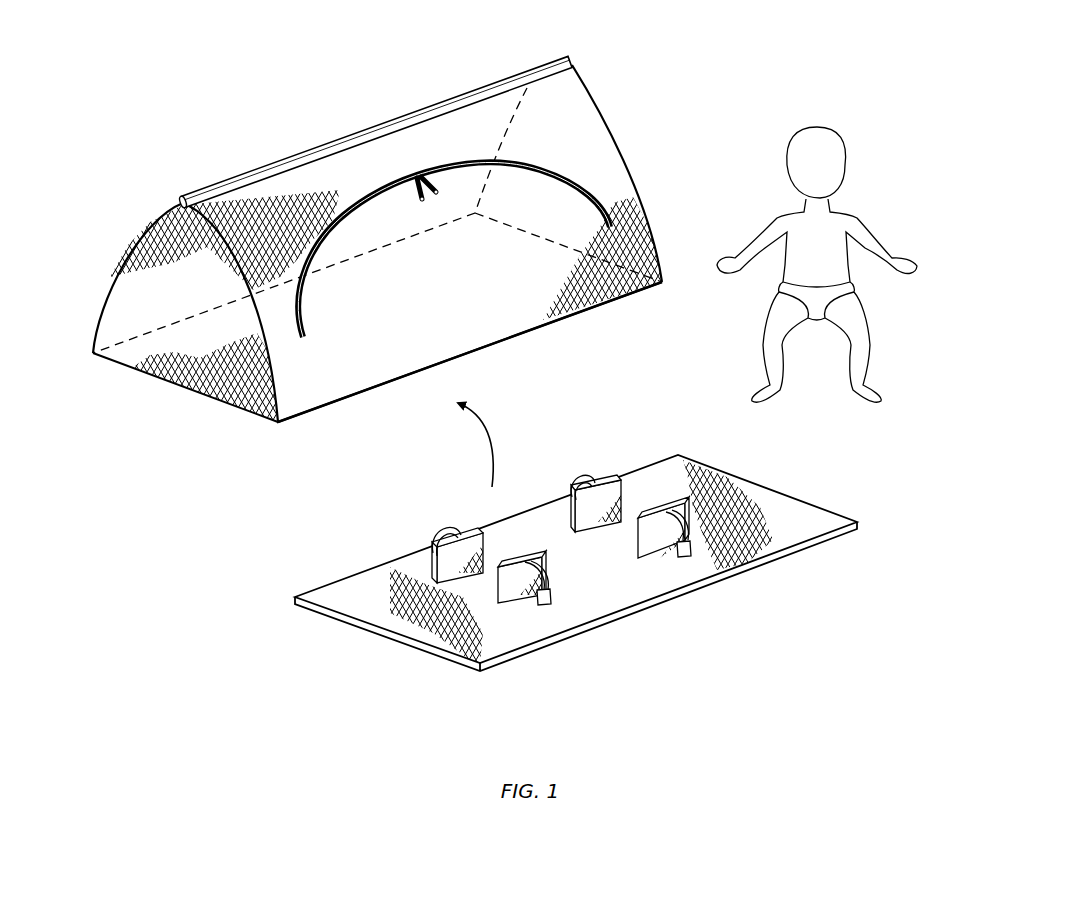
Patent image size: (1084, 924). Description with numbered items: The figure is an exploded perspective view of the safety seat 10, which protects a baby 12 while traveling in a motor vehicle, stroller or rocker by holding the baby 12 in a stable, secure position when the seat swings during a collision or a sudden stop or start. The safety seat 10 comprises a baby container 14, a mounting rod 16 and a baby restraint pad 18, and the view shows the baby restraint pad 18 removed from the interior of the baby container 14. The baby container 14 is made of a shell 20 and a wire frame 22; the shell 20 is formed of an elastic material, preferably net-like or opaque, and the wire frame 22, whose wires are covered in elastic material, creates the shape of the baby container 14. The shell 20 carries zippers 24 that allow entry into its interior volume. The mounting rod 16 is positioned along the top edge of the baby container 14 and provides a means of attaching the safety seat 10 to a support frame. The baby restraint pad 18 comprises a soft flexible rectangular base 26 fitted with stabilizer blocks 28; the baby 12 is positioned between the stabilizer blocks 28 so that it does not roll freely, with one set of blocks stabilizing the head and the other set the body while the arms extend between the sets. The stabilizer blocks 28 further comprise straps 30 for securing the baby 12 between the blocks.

The safety seat 10 is at (251, 493).
The baby 12 is at (800, 212).
The baby container 14 is at (623, 176).
The mounting rod 16 is at (567, 58).
The baby restraint pad 18 is at (775, 500).
The shell 20 is at (505, 327).
The wire frame 22 is at (607, 307).
The zippers 24 is at (424, 204).
The rectangular base 26 is at (735, 555).
The stabilizer blocks 28 is at (513, 600).
The straps 30 is at (435, 540).